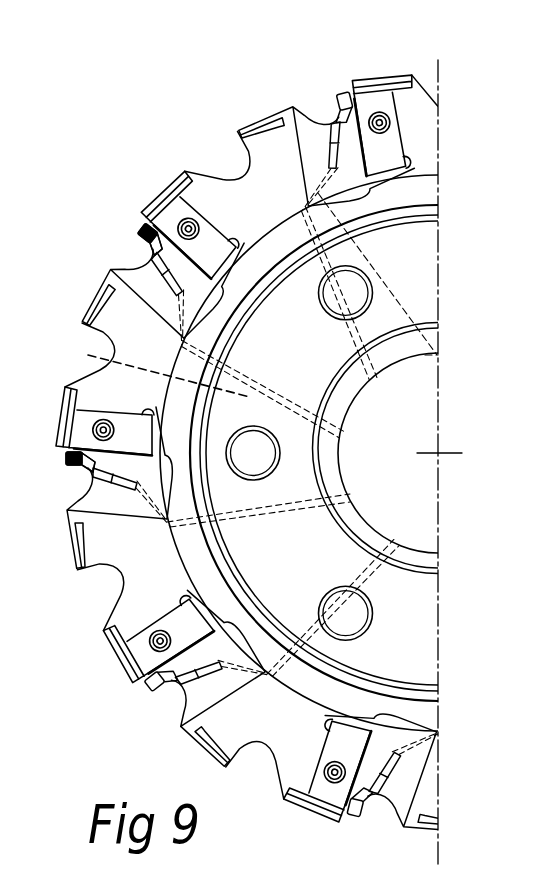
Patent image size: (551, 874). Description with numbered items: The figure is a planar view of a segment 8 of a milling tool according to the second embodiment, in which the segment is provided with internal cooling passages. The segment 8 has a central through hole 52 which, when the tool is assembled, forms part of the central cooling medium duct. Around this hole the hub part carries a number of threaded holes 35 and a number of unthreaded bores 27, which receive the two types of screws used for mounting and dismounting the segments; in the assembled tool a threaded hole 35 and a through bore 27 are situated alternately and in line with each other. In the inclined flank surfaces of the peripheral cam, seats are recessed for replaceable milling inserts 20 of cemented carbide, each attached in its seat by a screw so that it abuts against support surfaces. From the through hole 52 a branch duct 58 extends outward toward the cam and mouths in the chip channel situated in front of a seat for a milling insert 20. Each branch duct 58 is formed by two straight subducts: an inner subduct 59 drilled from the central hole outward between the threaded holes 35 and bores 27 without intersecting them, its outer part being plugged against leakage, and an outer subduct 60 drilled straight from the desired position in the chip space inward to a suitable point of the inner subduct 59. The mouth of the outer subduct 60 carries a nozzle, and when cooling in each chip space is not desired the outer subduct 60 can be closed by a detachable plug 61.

The segment 8 is at (275, 443).
The milling insert 20 is at (162, 208).
The unthreaded bore 27 is at (263, 452).
The threaded hole 35 is at (347, 620).
The through hole 52 is at (413, 408).
The branch duct 58 is at (383, 268).
The inner subduct 59 is at (152, 366).
The outer subduct 60 is at (175, 305).
The detachable plug 61 is at (85, 467).